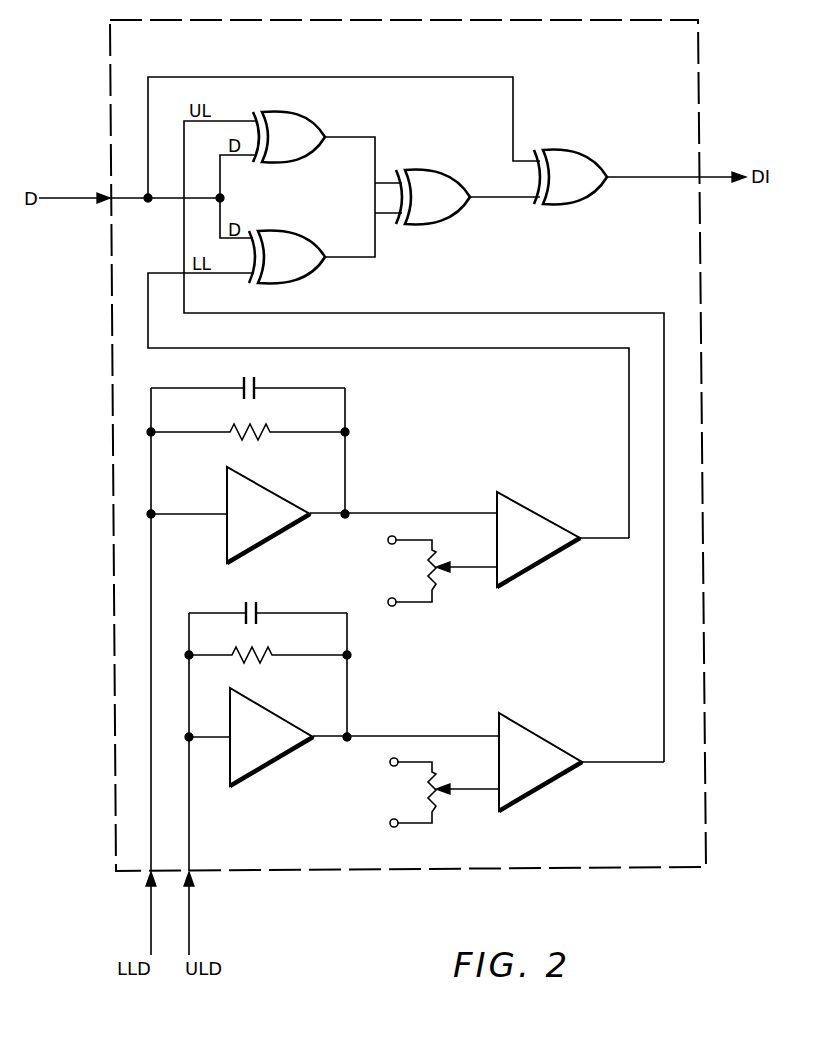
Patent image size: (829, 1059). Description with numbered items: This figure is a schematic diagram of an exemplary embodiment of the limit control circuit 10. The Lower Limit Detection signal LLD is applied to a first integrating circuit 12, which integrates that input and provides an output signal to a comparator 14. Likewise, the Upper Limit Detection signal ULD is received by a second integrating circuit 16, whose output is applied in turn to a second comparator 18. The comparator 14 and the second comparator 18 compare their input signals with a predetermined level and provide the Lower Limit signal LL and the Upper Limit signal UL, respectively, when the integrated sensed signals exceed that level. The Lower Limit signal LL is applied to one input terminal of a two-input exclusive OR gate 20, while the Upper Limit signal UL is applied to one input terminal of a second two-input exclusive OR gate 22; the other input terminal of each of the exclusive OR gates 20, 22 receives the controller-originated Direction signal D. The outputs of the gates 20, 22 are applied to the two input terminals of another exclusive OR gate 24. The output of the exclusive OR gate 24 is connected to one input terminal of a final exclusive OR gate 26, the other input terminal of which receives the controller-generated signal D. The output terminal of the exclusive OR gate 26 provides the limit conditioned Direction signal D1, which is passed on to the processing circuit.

The limit control circuit 10 is at (699, 78).
The first integrating circuit 12 is at (312, 488).
The comparator 14 is at (527, 530).
The second integrating circuit 16 is at (315, 704).
The second comparator 18 is at (528, 752).
The two-input exclusive OR gate 20 is at (290, 245).
The second two-input exclusive OR gate 22 is at (318, 127).
The exclusive OR gate 24 is at (440, 171).
The exclusive OR gate 26 is at (565, 163).